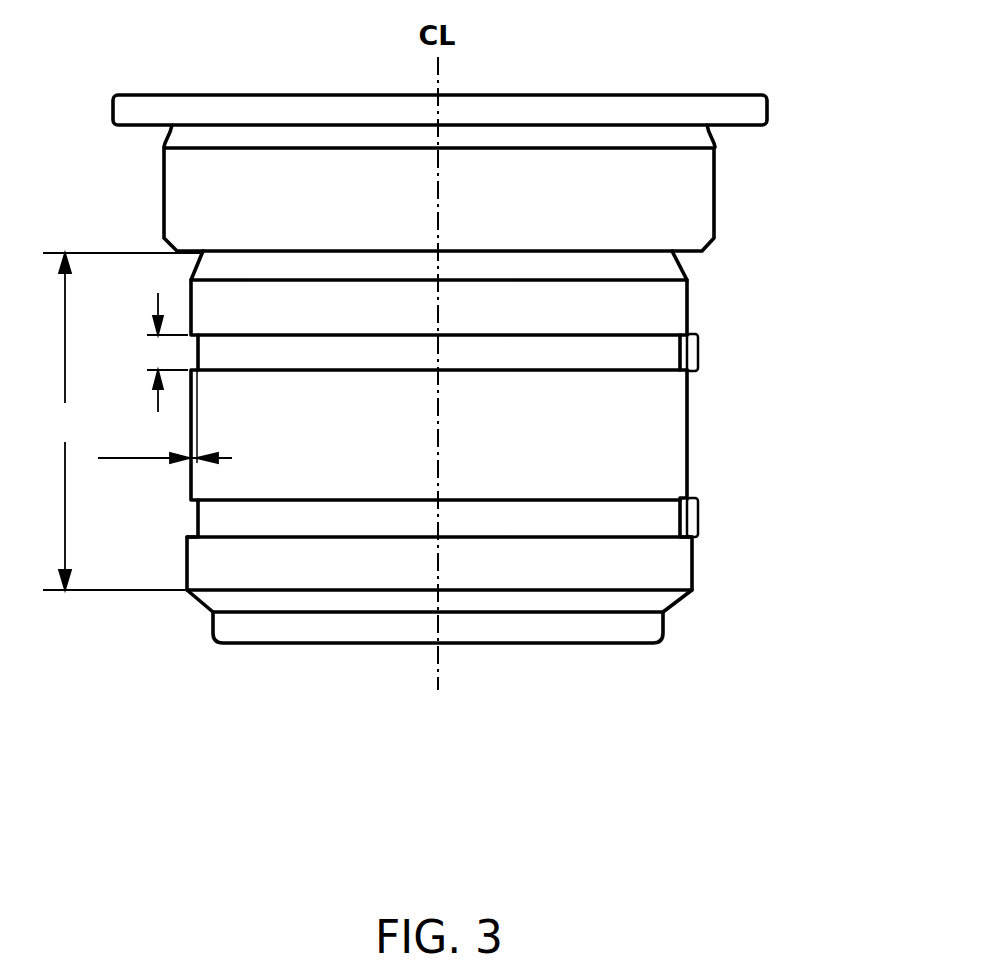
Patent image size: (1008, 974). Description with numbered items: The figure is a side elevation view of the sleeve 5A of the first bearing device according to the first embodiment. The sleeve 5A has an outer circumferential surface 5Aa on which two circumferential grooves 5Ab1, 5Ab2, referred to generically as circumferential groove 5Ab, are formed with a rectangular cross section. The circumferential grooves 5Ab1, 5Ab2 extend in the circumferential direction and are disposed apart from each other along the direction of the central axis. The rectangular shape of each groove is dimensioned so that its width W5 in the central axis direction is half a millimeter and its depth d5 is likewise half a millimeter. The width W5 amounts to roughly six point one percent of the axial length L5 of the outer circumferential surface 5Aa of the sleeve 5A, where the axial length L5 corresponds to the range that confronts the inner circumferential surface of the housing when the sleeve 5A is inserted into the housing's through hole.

The sleeve 5A is at (506, 322).
The outer circumferential surface 5Aa is at (687, 430).
The circumferential groove 5Ab is at (793, 437).
The circumferential groove 5Ab1 is at (698, 353).
The circumferential groove 5Ab2 is at (698, 518).
The axial length L5 is at (121, 421).
The width W5 is at (140, 352).
The depth d5 is at (165, 442).